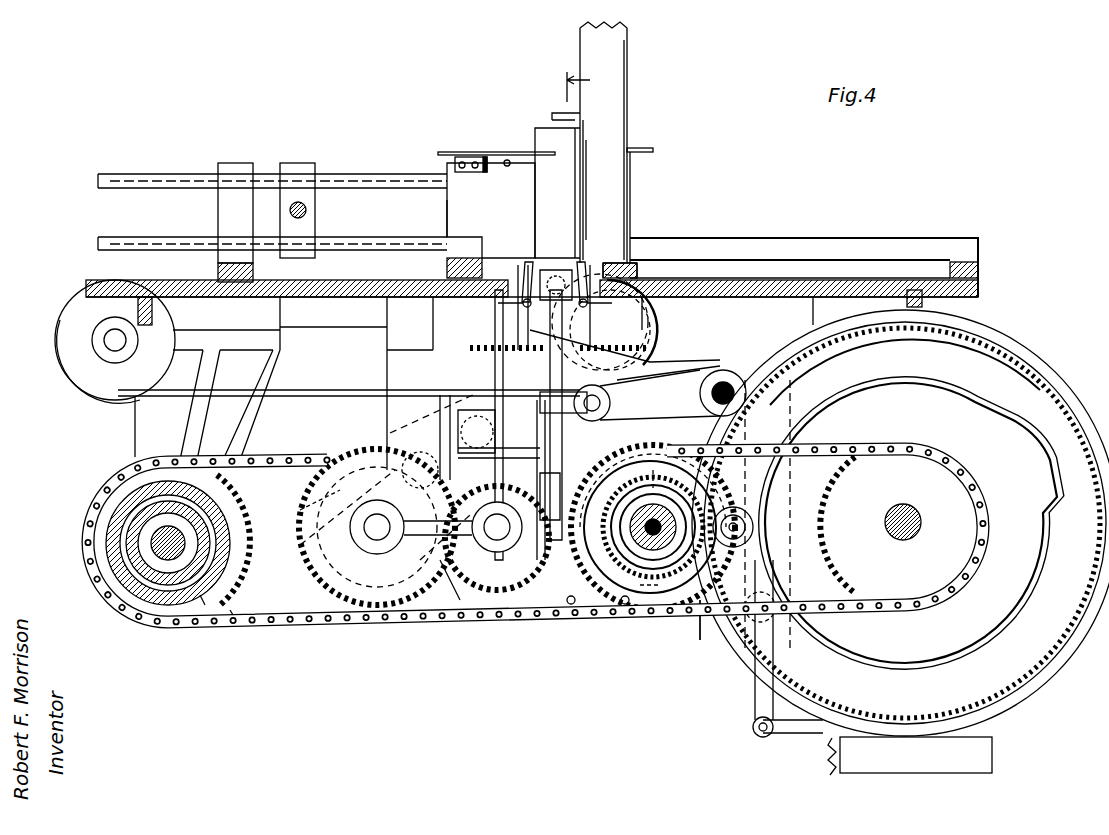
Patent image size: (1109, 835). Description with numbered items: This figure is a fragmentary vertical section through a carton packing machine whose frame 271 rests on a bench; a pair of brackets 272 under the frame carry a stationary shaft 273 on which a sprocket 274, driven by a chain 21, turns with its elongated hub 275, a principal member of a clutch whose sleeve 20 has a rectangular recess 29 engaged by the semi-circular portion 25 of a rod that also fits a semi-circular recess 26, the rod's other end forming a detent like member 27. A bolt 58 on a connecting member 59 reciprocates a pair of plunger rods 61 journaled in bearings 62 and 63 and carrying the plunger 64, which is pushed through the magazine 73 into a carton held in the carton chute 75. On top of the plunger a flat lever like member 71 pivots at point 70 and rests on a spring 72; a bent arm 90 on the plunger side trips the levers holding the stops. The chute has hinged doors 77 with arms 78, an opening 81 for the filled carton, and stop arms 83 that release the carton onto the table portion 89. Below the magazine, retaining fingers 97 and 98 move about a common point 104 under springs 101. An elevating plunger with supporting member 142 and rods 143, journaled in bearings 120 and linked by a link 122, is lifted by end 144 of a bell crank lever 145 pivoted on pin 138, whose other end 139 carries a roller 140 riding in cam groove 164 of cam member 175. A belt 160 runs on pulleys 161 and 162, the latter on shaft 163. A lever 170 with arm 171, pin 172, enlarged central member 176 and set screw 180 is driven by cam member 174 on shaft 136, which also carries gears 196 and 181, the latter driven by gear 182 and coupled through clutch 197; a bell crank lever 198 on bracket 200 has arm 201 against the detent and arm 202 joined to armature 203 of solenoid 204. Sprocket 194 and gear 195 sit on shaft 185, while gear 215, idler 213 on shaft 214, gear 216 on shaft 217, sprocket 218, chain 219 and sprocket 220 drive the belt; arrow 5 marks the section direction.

The direction arrow 5 is at (587, 84).
The sleeve 20 is at (120, 543).
The chain 21 is at (293, 628).
The semi-circular portion 25 is at (142, 522).
The semi-circular recess 26 is at (118, 470).
The detent like member 27 is at (625, 605).
The rectangular recess 29 is at (130, 507).
The bolt 58 is at (307, 210).
The connecting member 59 is at (300, 163).
The plunger rods 61 is at (123, 188).
The bearing 62 is at (230, 163).
The bearing 63 is at (447, 207).
The plunger 64 is at (466, 181).
The pivot point 70 is at (507, 160).
The flat lever like member 71 is at (448, 152).
The spring 72 is at (632, 183).
The magazine 73 is at (557, 193).
The carton chute 75 is at (627, 85).
The hinged doors 77 is at (586, 170).
The arms 78 is at (552, 113).
The opening 81 is at (640, 162).
The arm 83 is at (650, 148).
The table portion 89 is at (898, 238).
The bent arm 90 is at (482, 157).
The retaining fingers 97 is at (528, 262).
The retaining fingers 98 is at (550, 268).
The spring 101 is at (387, 347).
The common point 104 is at (520, 303).
The bearings 120 is at (610, 403).
The link 122 is at (497, 540).
The shaft 136 is at (652, 505).
The pin 138 is at (735, 370).
The other end 139 is at (840, 495).
The roller 140 is at (840, 545).
The supporting member 142 is at (612, 262).
The rods 143 is at (558, 359).
The end of bell crank lever 144 is at (660, 395).
The bell crank lever 145 is at (665, 322).
The belt 160 is at (140, 394).
The pulley 161 is at (68, 320).
The pulley 162 is at (712, 330).
The shaft 163 is at (615, 335).
The cam groove 164 is at (985, 360).
The lever 170 is at (596, 452).
The arm 171 is at (538, 555).
The pin 172 is at (560, 605).
The cam member 174 is at (590, 590).
The cam member 175 is at (1052, 355).
The enlarged central member 176 is at (470, 430).
The set screw 180 is at (438, 510).
The gear 181 is at (653, 475).
The gear 182 is at (450, 590).
The shaft 185 is at (918, 497).
The sprocket 194 is at (880, 445).
The gear 195 is at (1045, 705).
The gear 196 is at (568, 604).
The clutch 197 is at (615, 590).
The bell crank lever 198 is at (725, 650).
The bracket 200 is at (808, 386).
The arm 201 is at (700, 630).
The arm 202 is at (748, 670).
The armature 203 is at (790, 750).
The solenoid 204 is at (910, 756).
The idler 213 is at (395, 440).
The shaft 214 is at (422, 471).
The gear 215 is at (472, 560).
The gear 216 is at (300, 510).
The shaft 217 is at (350, 527).
The sprocket 218 is at (310, 490).
The chain 219 is at (372, 472).
The sprocket 220 is at (665, 364).
The frame 271 is at (95, 282).
The brackets 272 is at (135, 432).
The stationary shaft 273 is at (172, 562).
The sprocket 274 is at (233, 622).
The elongated hub 275 is at (203, 605).